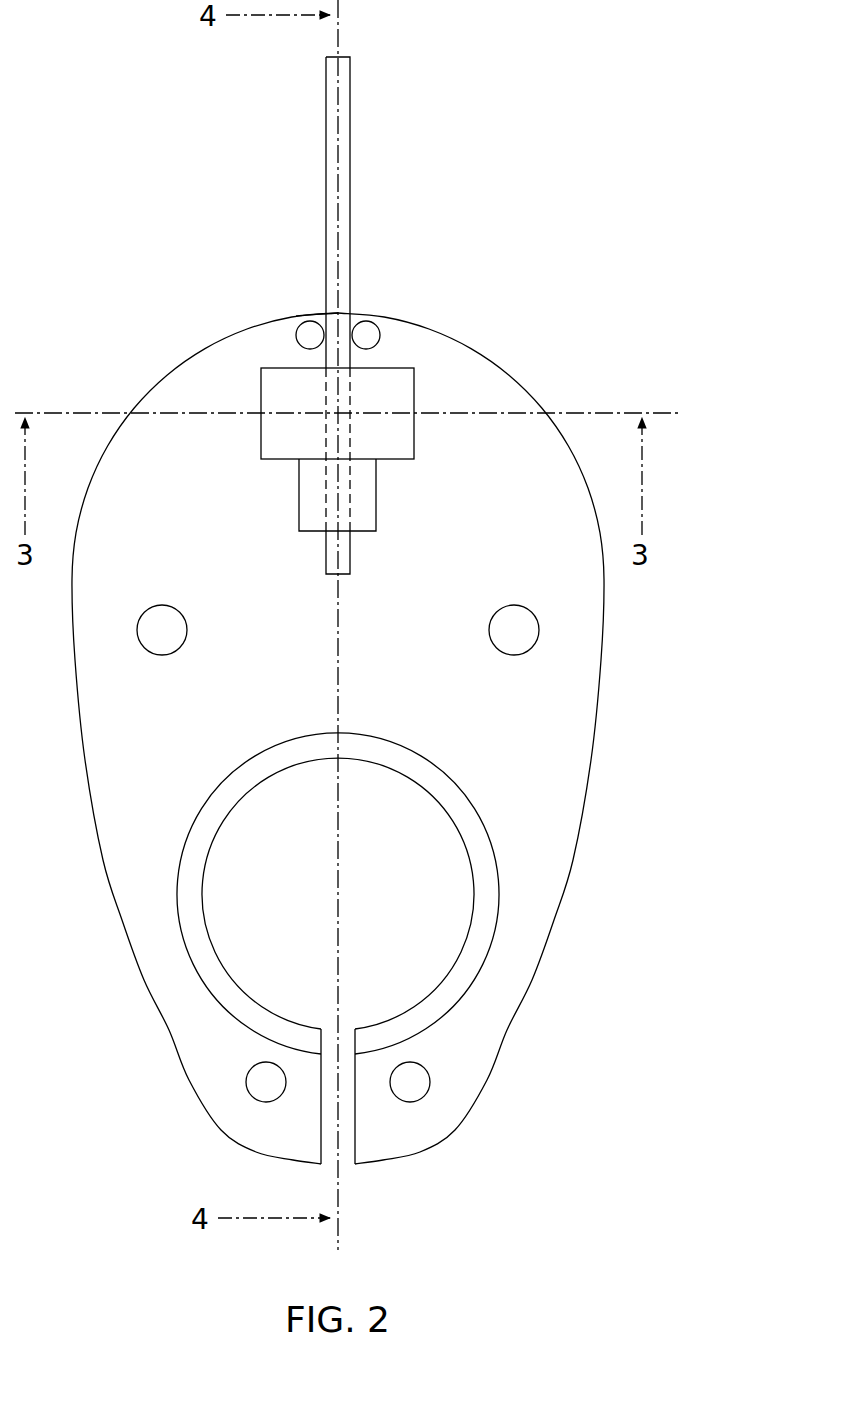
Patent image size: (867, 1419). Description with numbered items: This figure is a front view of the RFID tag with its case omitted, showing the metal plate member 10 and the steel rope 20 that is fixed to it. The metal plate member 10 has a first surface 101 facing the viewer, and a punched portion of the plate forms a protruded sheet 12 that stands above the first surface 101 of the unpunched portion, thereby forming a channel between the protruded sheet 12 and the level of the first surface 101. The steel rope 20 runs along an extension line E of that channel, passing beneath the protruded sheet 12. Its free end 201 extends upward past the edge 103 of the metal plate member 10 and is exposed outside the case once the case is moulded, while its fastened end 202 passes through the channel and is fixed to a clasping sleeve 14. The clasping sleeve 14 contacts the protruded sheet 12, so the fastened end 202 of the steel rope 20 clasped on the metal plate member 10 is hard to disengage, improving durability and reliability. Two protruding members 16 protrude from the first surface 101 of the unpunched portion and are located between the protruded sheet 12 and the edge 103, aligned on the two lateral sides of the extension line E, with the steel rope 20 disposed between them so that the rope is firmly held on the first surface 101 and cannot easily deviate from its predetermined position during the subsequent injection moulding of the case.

The metal plate member 10 is at (562, 687).
The first surface 101 is at (411, 738).
The edge 103 is at (311, 319).
The protruded sheet 12 is at (405, 379).
The clasping sleeve 14 is at (368, 504).
The protruding members 16 is at (305, 330).
The steel rope 20 is at (331, 315).
The free end 201 is at (351, 88).
The fastened end 202 is at (330, 508).
The extension line E is at (338, 40).